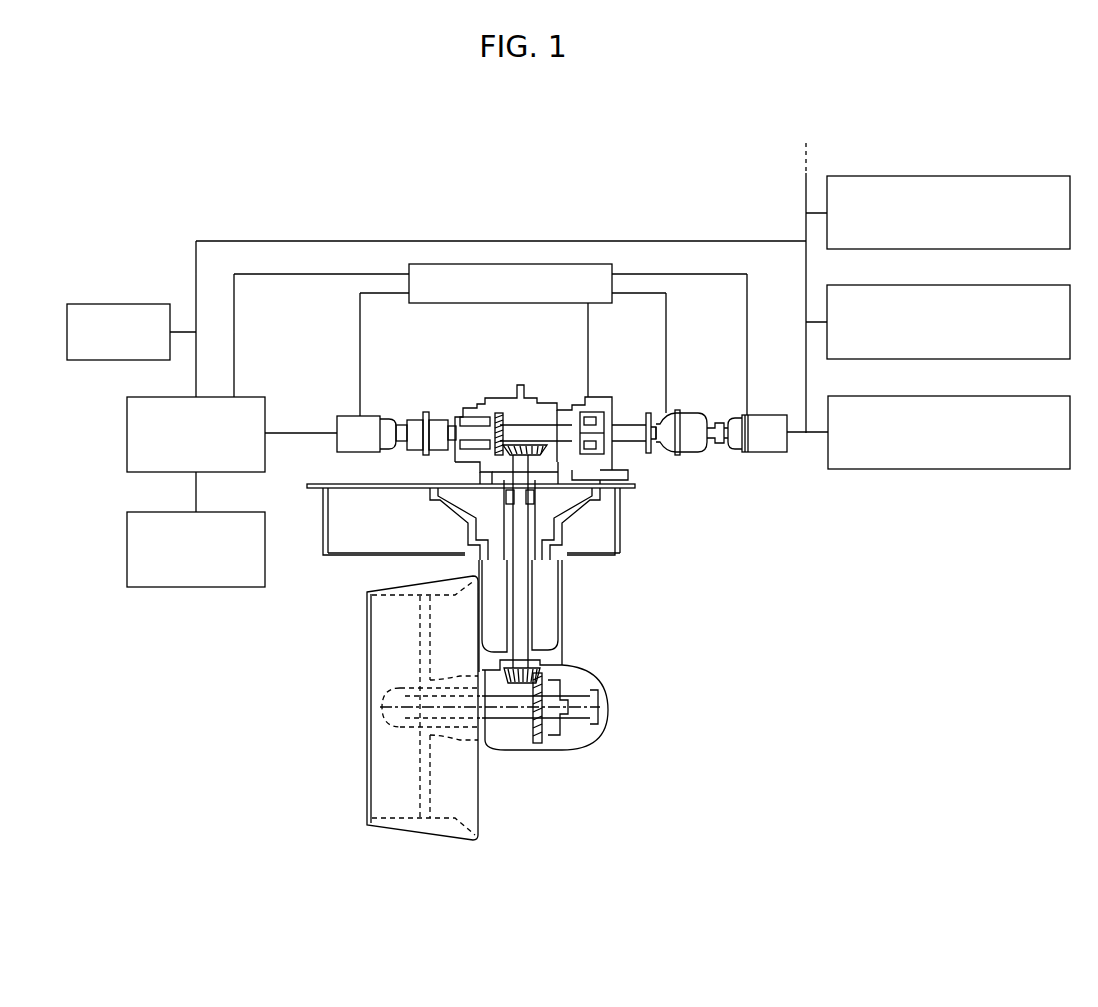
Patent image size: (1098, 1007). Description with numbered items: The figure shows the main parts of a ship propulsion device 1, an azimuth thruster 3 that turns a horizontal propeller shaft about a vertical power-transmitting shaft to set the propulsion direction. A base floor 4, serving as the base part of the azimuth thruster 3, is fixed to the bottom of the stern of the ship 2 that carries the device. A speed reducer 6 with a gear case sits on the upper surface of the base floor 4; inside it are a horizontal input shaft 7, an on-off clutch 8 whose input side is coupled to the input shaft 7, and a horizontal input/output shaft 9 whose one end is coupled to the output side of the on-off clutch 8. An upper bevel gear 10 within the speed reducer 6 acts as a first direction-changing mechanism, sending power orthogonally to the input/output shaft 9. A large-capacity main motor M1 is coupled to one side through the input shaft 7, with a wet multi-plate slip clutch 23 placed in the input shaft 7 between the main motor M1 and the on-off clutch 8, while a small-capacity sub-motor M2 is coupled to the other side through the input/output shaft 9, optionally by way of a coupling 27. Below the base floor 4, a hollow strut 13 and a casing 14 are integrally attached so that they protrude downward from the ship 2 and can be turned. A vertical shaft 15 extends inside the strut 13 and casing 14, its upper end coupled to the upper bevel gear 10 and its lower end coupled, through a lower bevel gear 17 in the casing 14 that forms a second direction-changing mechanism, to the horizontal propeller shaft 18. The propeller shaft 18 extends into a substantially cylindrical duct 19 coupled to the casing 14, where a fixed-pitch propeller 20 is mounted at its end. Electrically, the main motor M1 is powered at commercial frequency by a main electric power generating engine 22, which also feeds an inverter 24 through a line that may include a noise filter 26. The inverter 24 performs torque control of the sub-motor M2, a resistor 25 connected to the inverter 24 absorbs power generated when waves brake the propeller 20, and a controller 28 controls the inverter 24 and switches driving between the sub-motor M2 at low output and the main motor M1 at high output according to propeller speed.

The ship propulsion device 1 is at (189, 224).
The ship 2 is at (612, 563).
The azimuth thruster 3 is at (348, 661).
The base floor 4 is at (622, 520).
The speed reducer 6 is at (488, 408).
The input shaft 7 is at (647, 422).
The on-off clutch 8 is at (593, 412).
The input/output shaft 9 is at (452, 424).
The upper bevel gear 10 is at (498, 424).
The strut 13 is at (565, 605).
The casing 14 is at (580, 745).
The vertical shaft 15 is at (527, 620).
The lower bevel gear 17 is at (520, 690).
The propeller shaft 18 is at (530, 720).
The duct 19 is at (367, 800).
The propeller 20 is at (420, 767).
The main electric power generating engine 22 is at (992, 174).
The slip clutch 23 is at (680, 420).
The inverter 24 is at (127, 433).
The resistor 25 is at (127, 548).
The noise filter 26 is at (120, 304).
The coupling 27 is at (418, 440).
The controller 28 is at (523, 300).
The main motor M1 is at (764, 408).
The sub-motor M2 is at (340, 405).